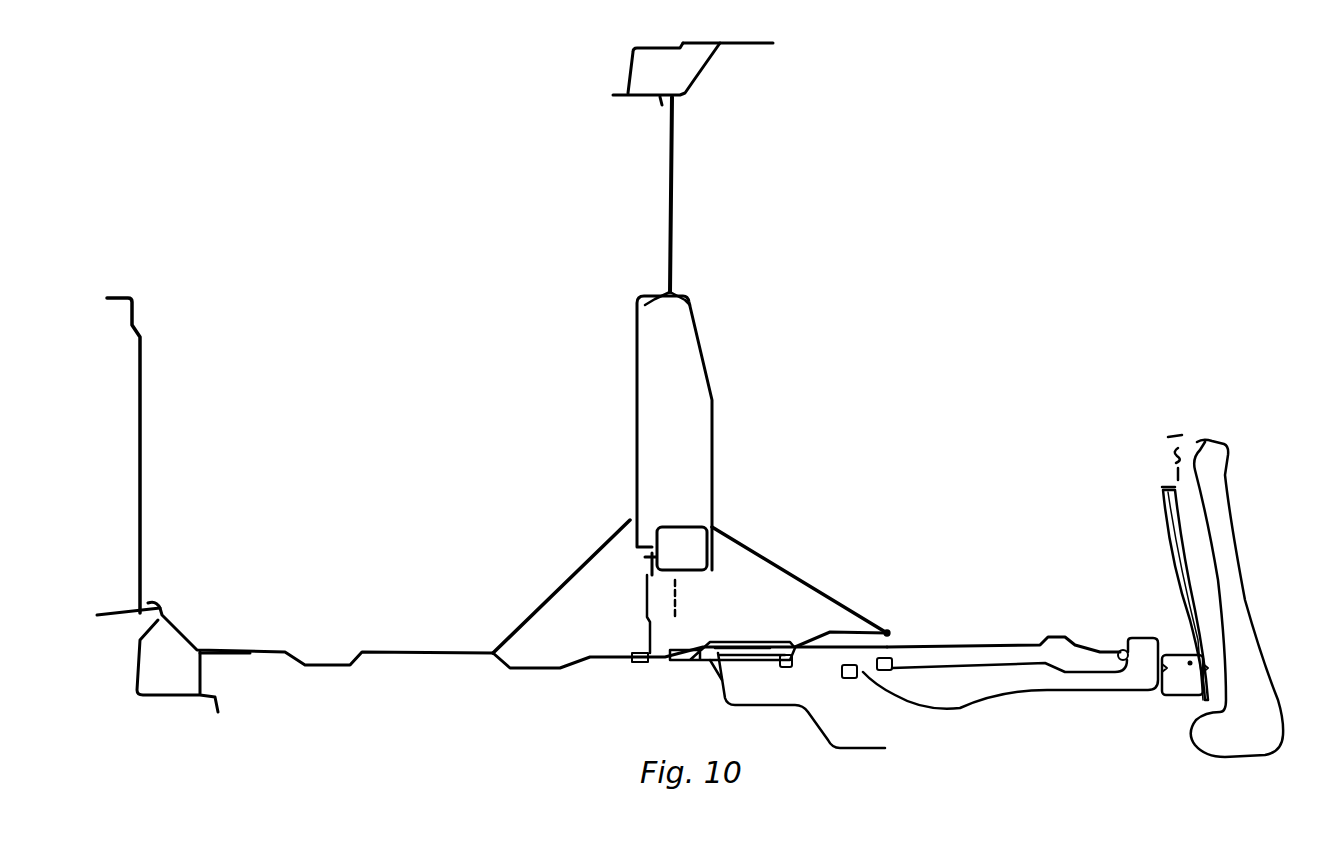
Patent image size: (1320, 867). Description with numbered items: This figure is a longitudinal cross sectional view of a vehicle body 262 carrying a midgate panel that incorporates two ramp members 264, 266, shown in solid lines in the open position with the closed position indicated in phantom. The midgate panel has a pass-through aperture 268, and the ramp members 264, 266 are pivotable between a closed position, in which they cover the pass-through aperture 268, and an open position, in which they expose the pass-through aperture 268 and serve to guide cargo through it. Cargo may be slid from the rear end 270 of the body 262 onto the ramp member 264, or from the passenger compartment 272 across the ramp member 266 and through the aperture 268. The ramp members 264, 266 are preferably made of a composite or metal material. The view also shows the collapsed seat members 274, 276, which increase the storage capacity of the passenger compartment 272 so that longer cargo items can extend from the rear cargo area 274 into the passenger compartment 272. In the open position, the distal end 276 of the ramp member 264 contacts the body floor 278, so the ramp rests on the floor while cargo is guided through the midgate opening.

The vehicle body 262 is at (117, 278).
The ramp member 264 is at (633, 425).
The ramp member 266 is at (717, 425).
The pass-through aperture 268 is at (635, 350).
The rear end 270 is at (142, 462).
The passenger compartment 272 is at (1040, 481).
The collapsed seat member 274 is at (1005, 645).
The collapsed seat member 276 is at (1235, 518).
The body floor 278 is at (416, 650).